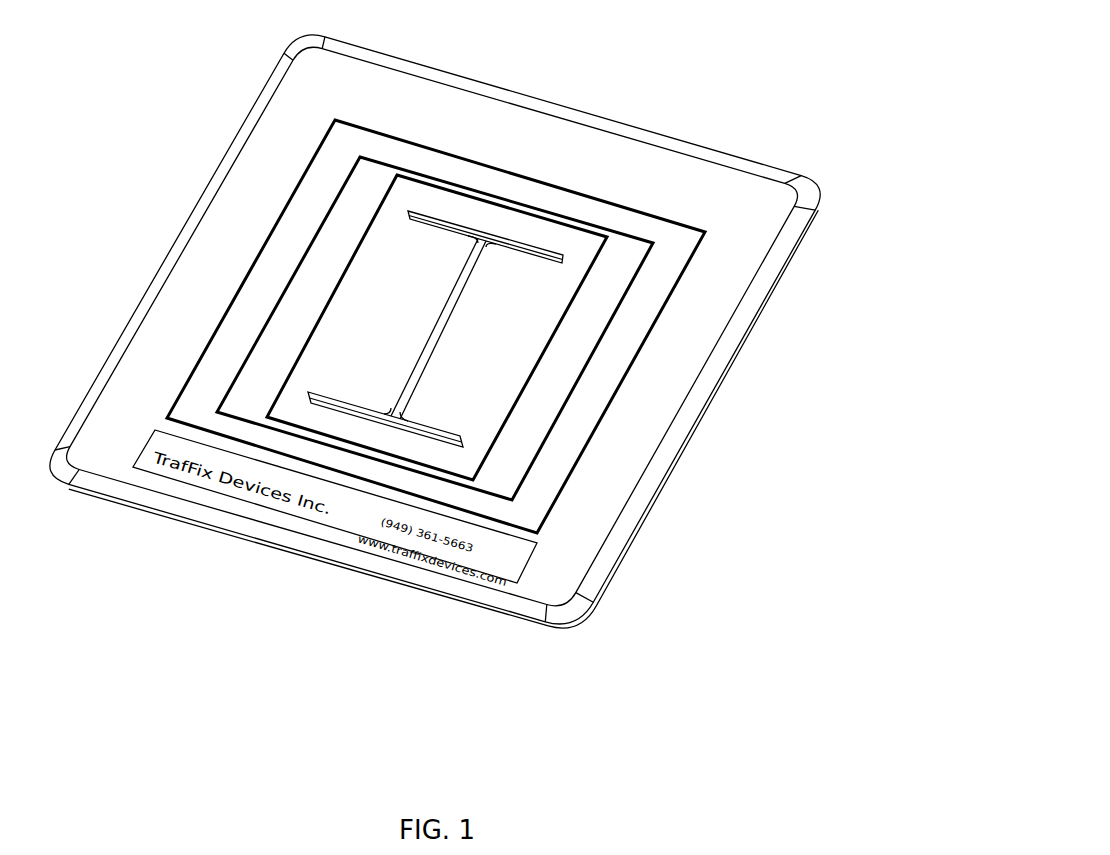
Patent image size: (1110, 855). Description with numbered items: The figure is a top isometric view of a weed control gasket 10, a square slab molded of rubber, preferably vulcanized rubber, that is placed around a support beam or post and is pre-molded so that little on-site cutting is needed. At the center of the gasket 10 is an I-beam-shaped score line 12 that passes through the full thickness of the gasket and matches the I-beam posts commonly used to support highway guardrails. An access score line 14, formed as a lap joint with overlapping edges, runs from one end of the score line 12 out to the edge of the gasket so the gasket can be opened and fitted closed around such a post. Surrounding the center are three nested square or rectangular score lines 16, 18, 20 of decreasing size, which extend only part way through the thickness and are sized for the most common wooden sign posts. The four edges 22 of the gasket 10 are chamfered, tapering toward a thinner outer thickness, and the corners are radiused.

The weed control gasket 10 is at (603, 517).
The I-beam-shaped score line 12 is at (433, 337).
The access score line 14 is at (487, 235).
The square or rectangular score line 16 is at (197, 370).
The square or rectangular score line 18 is at (242, 420).
The square or rectangular score line 20 is at (335, 438).
The chamfered edges 22 is at (773, 257).